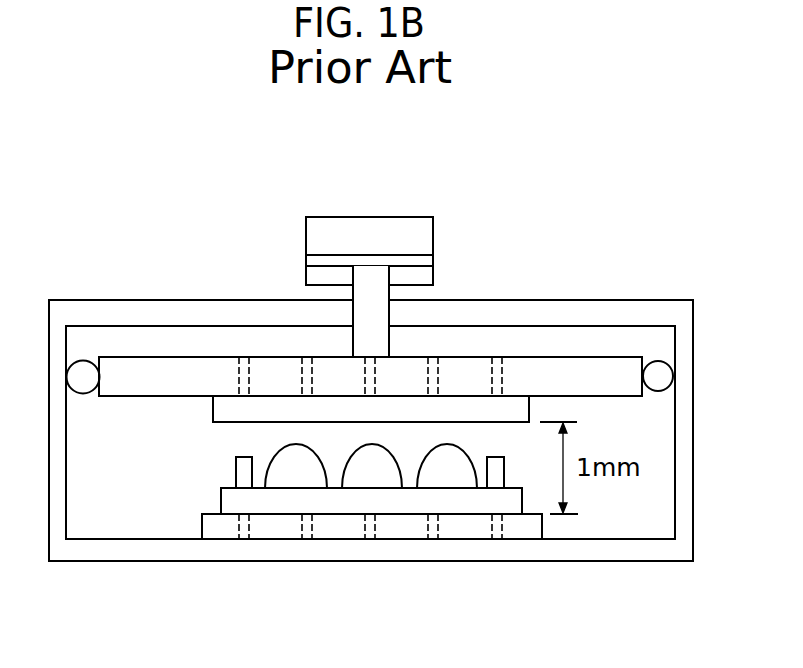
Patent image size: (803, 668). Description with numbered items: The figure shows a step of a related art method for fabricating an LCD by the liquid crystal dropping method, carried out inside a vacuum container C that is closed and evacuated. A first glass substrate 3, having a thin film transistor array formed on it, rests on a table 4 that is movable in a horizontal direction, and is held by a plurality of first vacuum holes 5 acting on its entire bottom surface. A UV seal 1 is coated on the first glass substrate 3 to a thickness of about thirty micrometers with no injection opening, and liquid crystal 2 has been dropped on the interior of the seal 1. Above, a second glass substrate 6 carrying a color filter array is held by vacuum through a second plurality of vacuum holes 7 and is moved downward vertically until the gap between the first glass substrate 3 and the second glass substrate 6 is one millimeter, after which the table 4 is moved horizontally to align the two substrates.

The UV seal 1 is at (241, 470).
The liquid crystal 2 is at (383, 473).
The first glass substrate 3 is at (500, 500).
The table 4 is at (272, 528).
The first vacuum holes 5 is at (310, 527).
The second glass substrate 6 is at (217, 404).
The second vacuum holes 7 is at (438, 376).
The vacuum container C is at (620, 548).